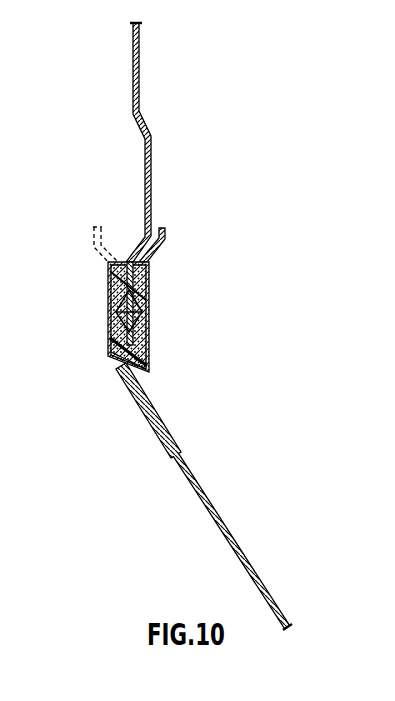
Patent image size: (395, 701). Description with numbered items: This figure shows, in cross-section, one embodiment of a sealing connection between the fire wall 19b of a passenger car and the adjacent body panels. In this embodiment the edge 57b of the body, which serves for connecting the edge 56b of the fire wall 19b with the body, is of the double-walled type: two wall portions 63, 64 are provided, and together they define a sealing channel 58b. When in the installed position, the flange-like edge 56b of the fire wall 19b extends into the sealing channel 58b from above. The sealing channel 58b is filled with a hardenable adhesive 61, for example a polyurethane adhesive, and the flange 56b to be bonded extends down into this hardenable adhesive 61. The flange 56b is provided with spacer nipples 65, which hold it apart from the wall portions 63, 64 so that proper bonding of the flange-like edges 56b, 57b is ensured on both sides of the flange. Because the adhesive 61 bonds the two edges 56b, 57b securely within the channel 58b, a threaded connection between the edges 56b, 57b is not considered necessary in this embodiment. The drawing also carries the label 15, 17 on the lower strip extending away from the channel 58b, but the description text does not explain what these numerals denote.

The fire wall 19b is at (160, 134).
The edge of the fire wall 56b is at (123, 253).
The hardenable adhesive 61 is at (123, 305).
The wall portion 63 is at (149, 333).
The wall portion 64 is at (112, 298).
The spacer nipples 65 is at (115, 307).
The sealing channel 58b is at (120, 327).
The edge of the body 57b is at (207, 496).
The winding conductor 15 is at (207, 496).
The winding conductor 17 is at (245, 541).